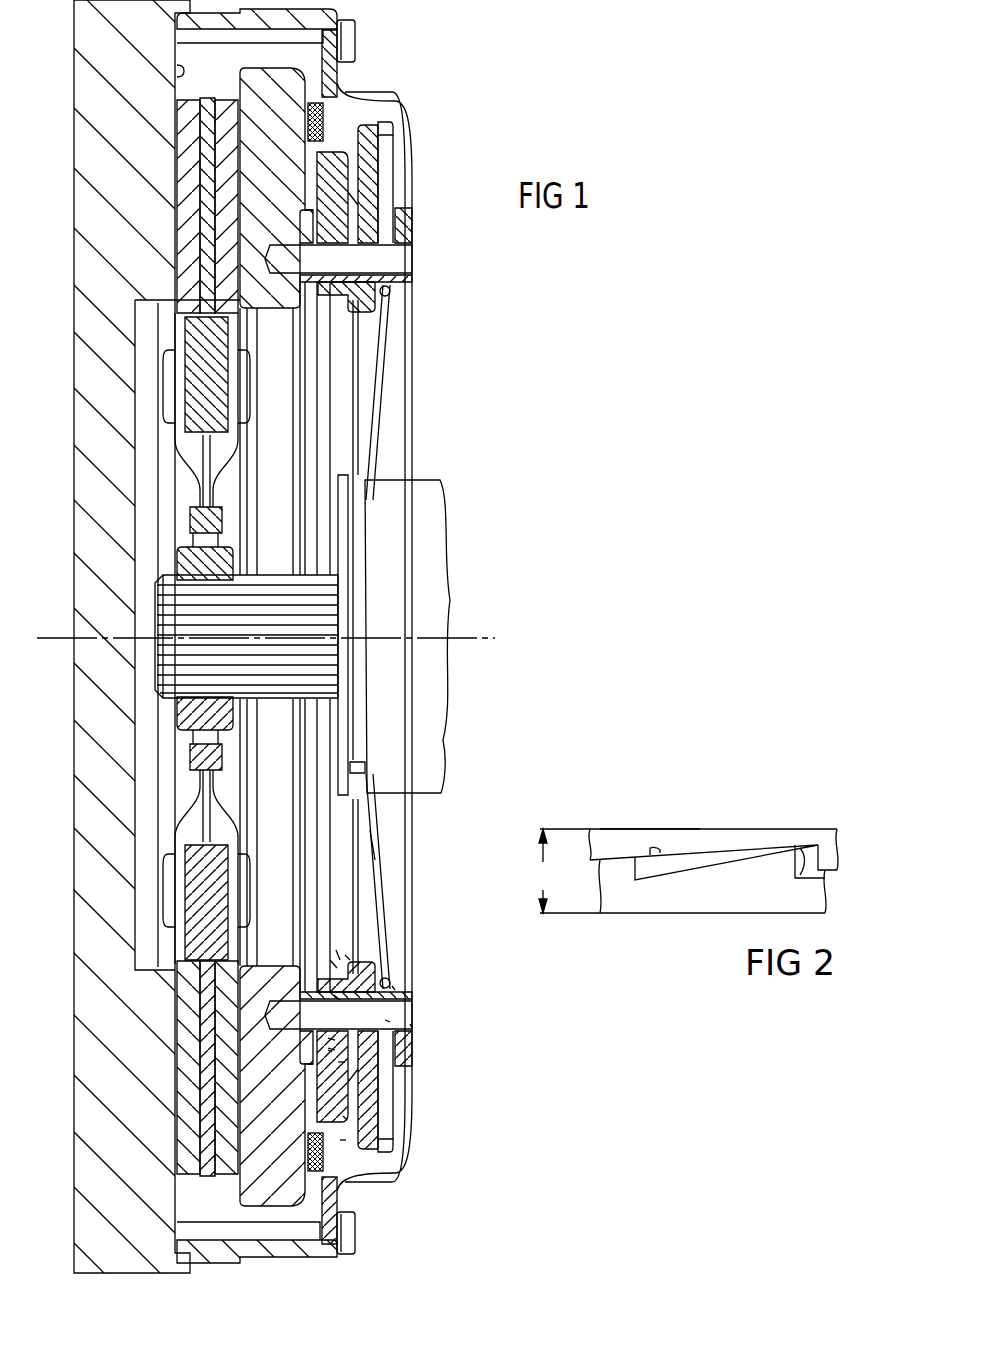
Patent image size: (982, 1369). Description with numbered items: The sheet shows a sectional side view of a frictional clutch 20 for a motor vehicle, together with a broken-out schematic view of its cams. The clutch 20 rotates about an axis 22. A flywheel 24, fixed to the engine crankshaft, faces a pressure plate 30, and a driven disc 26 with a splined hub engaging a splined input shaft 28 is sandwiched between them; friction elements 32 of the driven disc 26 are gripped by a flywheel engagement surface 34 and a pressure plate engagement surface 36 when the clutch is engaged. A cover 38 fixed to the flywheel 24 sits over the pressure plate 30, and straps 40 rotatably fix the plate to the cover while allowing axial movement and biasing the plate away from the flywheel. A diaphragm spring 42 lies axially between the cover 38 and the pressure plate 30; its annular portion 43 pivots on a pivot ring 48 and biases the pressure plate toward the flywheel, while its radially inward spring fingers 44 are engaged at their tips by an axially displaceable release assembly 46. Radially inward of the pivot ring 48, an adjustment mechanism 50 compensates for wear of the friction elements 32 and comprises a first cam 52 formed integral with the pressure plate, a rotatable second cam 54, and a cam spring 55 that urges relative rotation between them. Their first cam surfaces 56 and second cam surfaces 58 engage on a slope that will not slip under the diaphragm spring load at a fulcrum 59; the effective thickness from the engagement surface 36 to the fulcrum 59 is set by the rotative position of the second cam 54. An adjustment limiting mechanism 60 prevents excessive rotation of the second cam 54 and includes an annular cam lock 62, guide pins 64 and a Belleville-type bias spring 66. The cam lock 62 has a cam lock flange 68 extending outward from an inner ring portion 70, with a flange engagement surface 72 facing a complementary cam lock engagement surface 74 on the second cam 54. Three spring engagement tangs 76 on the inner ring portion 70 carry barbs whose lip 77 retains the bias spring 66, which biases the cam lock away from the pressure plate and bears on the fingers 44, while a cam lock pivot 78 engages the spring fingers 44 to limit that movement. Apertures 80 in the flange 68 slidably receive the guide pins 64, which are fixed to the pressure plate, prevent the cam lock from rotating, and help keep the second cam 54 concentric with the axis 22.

In FIG. 1, the frictional clutch 20 is at (528, 358).
In FIG. 1, the axis 22 is at (460, 634).
In FIG. 1, the flywheel 24 is at (73, 222).
In FIG. 1, the driven disc 26 is at (200, 776).
In FIG. 1, the splined input shaft 28 is at (312, 700).
In FIG. 1, the pressure plate 30 is at (285, 68).
In FIG. 1, the friction elements 32 is at (232, 1178).
In FIG. 1, the flywheel engagement surface 34 is at (180, 70).
In FIG. 1, the pressure plate engagement surface 36 is at (245, 67).
In FIG. 2, the pressure plate engagement surface 36 is at (618, 913).
In FIG. 1, the cover 38 is at (412, 183).
In FIG. 1, the straps 40 is at (323, 125).
In FIG. 1, the diaphragm spring 42 is at (380, 241).
In FIG. 1, the annular portion 43 is at (378, 157).
In FIG. 1, the spring fingers 44 is at (372, 313).
In FIG. 1, the release assembly 46 is at (427, 480).
In FIG. 1, the pivot ring 48 is at (393, 130).
In FIG. 1, the adjustment mechanism 50 is at (345, 1143).
In FIG. 1, the first cam 52 is at (345, 1062).
In FIG. 2, the first cam 52 is at (645, 852).
In FIG. 1, the second cam 54 is at (345, 1118).
In FIG. 2, the second cam 54 is at (656, 846).
In FIG. 1, the cam spring 55 is at (320, 376).
In FIG. 2, the first cam surfaces 56 is at (783, 845).
In FIG. 2, the second cam surfaces 58 is at (797, 878).
In FIG. 1, the fulcrum 59 is at (358, 200).
In FIG. 2, the fulcrum 59 is at (600, 829).
In FIG. 1, the adjustment limiting mechanism 60 is at (336, 952).
In FIG. 1, the cam lock 62 is at (337, 968).
In FIG. 1, the guide pins 64 is at (412, 1026).
In FIG. 1, the bias spring 66 is at (375, 857).
In FIG. 1, the cam lock flange 68 is at (335, 1050).
In FIG. 1, the inner ring portion 70 is at (388, 1022).
In FIG. 1, the flange engagement surface 72 is at (330, 1050).
In FIG. 1, the cam lock engagement surface 74 is at (335, 1040).
In FIG. 1, the spring engagement tangs 76 is at (395, 990).
In FIG. 1, the lip 77 is at (390, 292).
In FIG. 1, the cam lock pivot 78 is at (350, 960).
In FIG. 1, the apertures 80 is at (340, 1000).